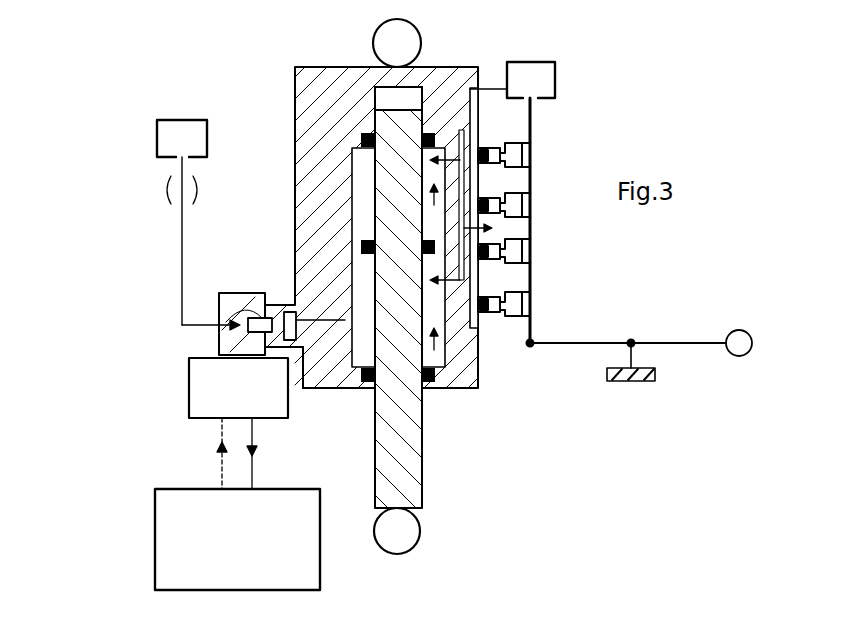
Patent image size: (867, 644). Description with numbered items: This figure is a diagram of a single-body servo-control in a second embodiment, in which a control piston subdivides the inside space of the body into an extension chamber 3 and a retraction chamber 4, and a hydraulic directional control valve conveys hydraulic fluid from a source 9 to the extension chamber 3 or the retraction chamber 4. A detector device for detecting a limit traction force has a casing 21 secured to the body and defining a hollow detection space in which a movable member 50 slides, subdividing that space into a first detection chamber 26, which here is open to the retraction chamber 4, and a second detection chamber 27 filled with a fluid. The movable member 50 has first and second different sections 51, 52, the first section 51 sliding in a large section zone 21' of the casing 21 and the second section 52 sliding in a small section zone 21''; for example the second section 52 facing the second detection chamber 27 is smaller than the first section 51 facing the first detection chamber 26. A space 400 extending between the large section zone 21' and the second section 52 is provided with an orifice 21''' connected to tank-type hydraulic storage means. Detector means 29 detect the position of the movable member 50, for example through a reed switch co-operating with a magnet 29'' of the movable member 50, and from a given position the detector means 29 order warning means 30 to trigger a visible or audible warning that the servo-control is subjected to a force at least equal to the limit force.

The extension chamber 3 is at (500, 140).
The retraction chamber 4 is at (432, 392).
The source 9 is at (557, 75).
The casing 21 is at (171, 243).
The large section zone 21' is at (260, 442).
The small section zone 21'' is at (177, 313).
The orifice 21''' is at (226, 276).
The first detection chamber 26 is at (298, 364).
The second detection chamber 27 is at (193, 378).
The detector means 29 is at (115, 417).
The magnet 29'' is at (237, 387).
The warning means 30 is at (118, 549).
The movable member 50 is at (237, 265).
The first section 51 is at (270, 360).
The second section 52 is at (238, 326).
The space 400 is at (272, 297).